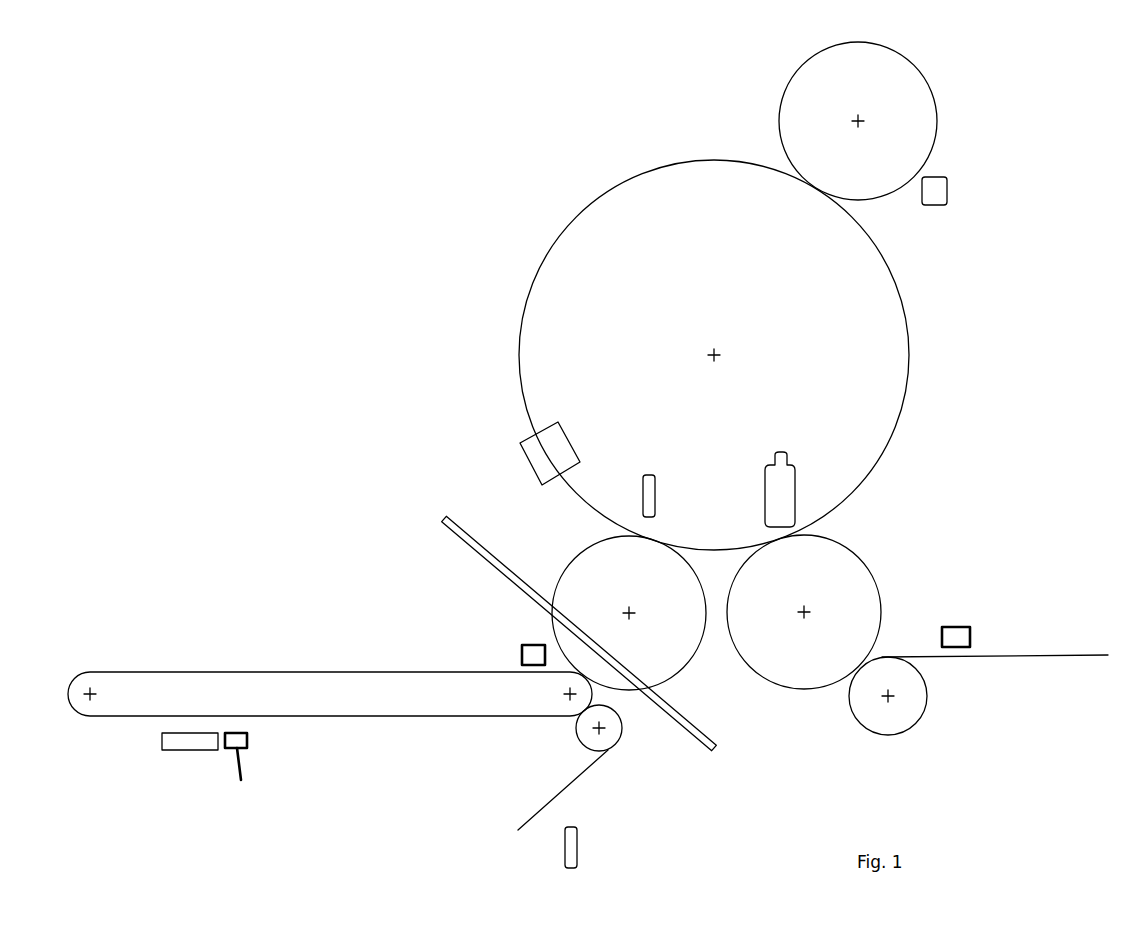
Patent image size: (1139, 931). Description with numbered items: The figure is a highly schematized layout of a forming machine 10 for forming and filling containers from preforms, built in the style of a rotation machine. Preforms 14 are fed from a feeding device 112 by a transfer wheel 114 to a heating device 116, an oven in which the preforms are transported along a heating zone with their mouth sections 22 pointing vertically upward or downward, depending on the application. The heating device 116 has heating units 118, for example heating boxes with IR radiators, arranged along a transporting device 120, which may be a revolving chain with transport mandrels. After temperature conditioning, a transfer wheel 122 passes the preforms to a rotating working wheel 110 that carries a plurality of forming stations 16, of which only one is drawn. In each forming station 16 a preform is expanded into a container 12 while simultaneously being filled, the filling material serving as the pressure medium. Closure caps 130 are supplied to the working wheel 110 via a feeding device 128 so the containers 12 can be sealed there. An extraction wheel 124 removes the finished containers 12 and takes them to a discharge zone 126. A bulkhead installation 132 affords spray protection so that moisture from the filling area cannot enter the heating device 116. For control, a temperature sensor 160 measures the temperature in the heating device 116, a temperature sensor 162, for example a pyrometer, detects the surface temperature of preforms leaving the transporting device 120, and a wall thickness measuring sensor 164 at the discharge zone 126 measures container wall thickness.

The forming machine 10 is at (471, 143).
The container 12 is at (796, 486).
The preform 14 is at (657, 500).
The forming station 16 is at (520, 453).
The mouth section 22 is at (577, 829).
The working wheel 110 is at (908, 370).
The feeding device 112 is at (537, 814).
The transfer wheel 114 is at (618, 740).
The heating device 116 is at (247, 607).
The heating unit 118 is at (187, 751).
The transporting device 120 is at (316, 672).
The transfer wheel 122 is at (542, 645).
The extraction wheel 124 is at (882, 602).
The discharge zone 126 is at (1033, 657).
The feeding device 128 is at (781, 118).
The closure cap 130 is at (948, 191).
The bulkhead installation 132 is at (463, 552).
The temperature sensor 160 is at (242, 778).
The temperature sensor 162 is at (518, 655).
The wall thickness measuring sensor 164 is at (966, 629).